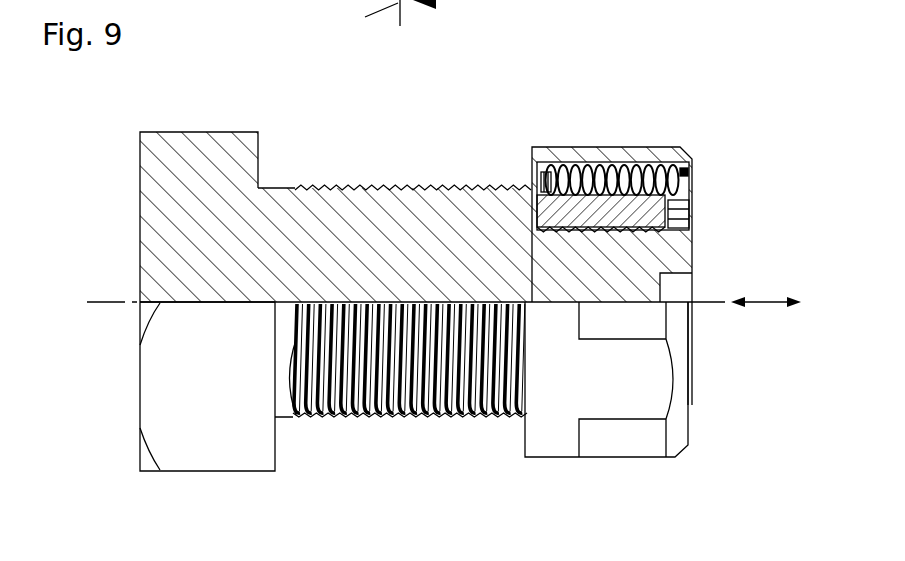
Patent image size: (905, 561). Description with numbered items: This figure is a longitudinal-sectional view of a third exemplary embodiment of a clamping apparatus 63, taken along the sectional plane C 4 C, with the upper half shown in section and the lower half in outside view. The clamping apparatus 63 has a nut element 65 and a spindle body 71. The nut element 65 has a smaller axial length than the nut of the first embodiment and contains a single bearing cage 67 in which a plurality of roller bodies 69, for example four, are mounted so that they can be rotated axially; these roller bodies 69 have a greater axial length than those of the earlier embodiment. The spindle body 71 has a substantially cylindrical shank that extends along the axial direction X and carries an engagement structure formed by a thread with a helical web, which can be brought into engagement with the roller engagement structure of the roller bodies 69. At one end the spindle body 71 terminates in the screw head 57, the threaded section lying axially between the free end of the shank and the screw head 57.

The screw head 57 is at (172, 172).
The spindle body 71 is at (410, 215).
The clamping apparatus 63 is at (645, 234).
The nut element 65 is at (678, 149).
The bearing cage 67 is at (547, 176).
The roller bodies 69 is at (598, 170).
The axial direction X is at (768, 306).
The sectional plane C- C is at (400, 32).